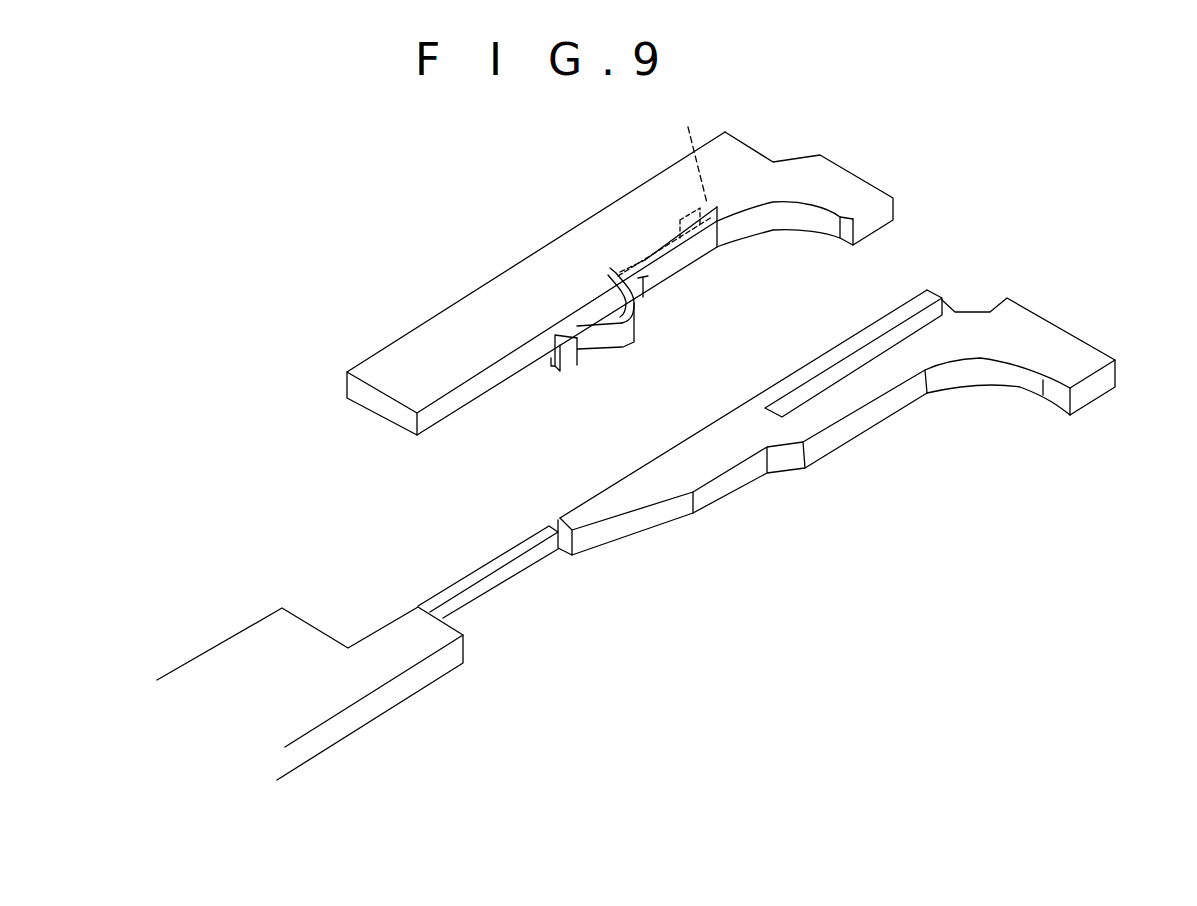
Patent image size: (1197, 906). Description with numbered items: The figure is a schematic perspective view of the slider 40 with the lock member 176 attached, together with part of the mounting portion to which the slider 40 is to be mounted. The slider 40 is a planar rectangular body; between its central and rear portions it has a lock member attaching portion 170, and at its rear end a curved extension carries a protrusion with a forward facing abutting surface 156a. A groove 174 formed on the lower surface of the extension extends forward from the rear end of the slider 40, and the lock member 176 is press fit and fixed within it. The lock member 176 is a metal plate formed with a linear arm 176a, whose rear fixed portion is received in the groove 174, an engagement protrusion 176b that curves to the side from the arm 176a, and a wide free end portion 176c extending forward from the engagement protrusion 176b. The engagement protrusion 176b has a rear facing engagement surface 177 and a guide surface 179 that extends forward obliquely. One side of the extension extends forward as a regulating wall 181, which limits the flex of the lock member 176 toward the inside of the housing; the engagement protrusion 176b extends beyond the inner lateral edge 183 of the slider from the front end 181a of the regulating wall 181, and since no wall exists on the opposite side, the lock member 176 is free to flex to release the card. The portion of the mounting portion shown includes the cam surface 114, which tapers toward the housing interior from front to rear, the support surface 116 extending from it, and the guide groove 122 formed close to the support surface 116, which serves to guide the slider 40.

The slider 40 is at (627, 296).
The cam surface 114 is at (647, 523).
The support surface 116 is at (720, 492).
The guide groove 122 is at (885, 343).
The abutting surface 156a is at (845, 217).
The lock member attaching portion 170 is at (636, 520).
The groove 174 is at (694, 153).
The lock member 176 is at (630, 353).
The arm 176a is at (705, 262).
The engagement protrusion 176b is at (635, 322).
The free end portion 176c is at (568, 360).
The engagement surface 177 is at (637, 298).
The guide surface 179 is at (596, 340).
The regulating wall 181 is at (657, 242).
The front end of regulating wall 181a is at (627, 277).
The inner lateral edge 183 is at (512, 363).